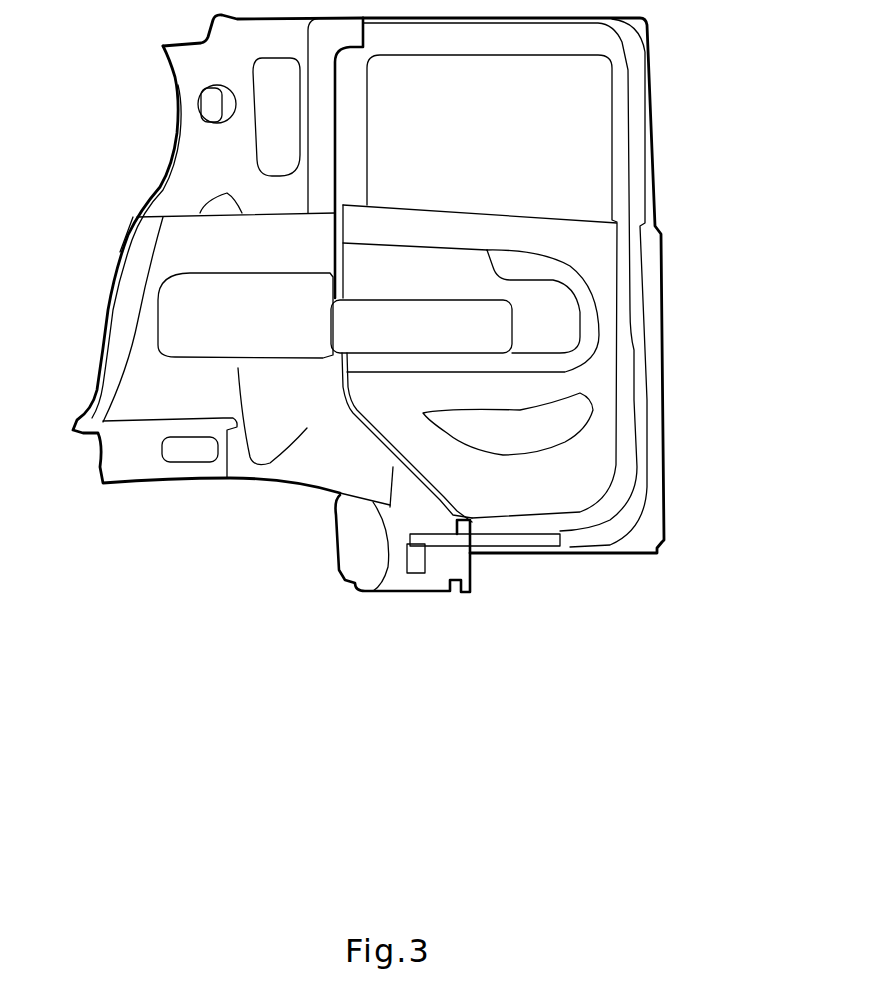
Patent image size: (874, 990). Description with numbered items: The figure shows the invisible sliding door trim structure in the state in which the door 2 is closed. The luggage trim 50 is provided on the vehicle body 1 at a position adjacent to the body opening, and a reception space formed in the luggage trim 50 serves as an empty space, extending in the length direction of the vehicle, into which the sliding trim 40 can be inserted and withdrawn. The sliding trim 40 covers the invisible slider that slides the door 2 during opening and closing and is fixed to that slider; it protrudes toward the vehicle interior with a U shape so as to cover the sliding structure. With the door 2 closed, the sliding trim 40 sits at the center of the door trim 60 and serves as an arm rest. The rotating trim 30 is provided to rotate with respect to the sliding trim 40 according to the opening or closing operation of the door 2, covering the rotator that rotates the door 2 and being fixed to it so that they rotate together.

The vehicle body 1 is at (165, 178).
The door 2 is at (645, 162).
The rotating trim 30 is at (567, 335).
The sliding trim 40 is at (367, 333).
The luggage trim 50 is at (140, 313).
The door trim 60 is at (588, 250).